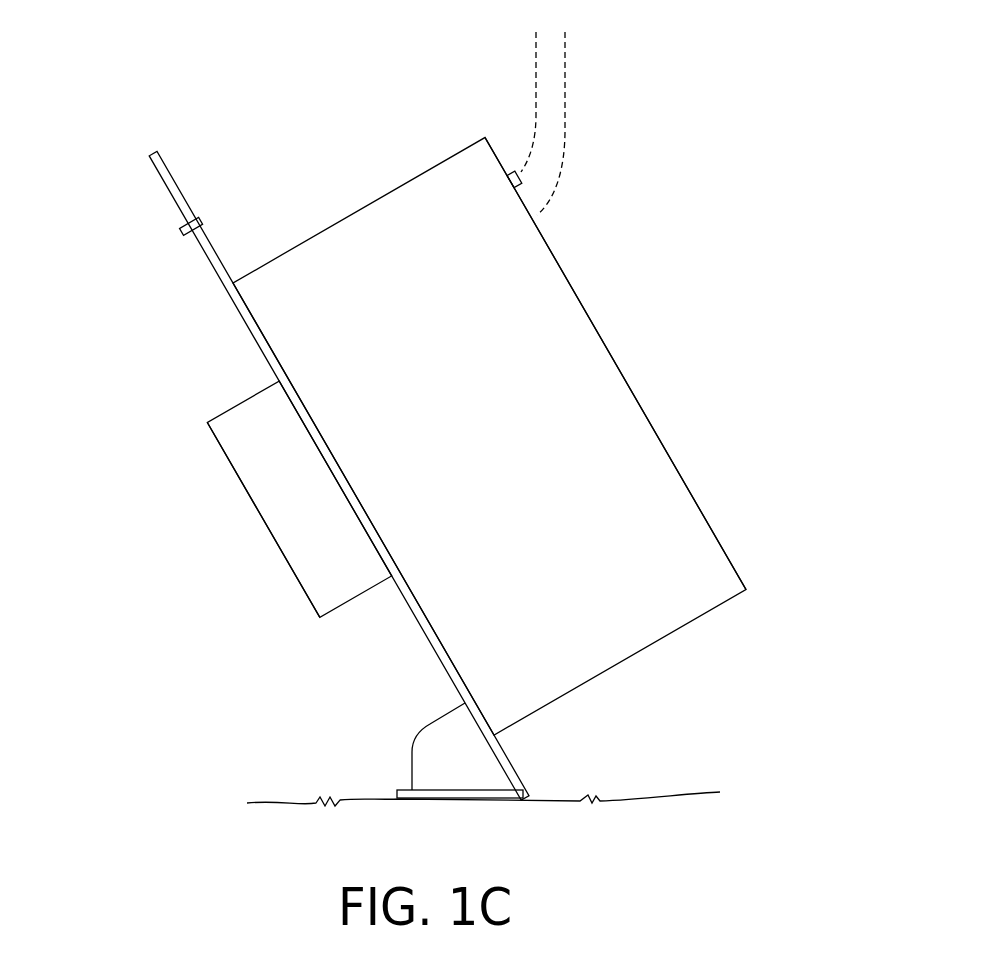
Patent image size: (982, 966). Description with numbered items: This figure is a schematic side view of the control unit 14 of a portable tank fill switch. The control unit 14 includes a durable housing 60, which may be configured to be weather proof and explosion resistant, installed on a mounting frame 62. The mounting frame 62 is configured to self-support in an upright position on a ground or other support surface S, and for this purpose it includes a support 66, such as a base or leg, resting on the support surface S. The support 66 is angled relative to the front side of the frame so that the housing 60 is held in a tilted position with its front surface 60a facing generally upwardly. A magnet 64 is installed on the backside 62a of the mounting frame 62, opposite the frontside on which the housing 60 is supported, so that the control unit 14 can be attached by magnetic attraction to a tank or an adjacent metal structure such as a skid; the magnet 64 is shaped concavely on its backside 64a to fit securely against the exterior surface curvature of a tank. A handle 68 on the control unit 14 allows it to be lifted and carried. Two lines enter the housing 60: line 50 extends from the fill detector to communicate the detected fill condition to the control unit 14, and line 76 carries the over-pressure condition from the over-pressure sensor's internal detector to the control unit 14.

The control unit 14 is at (808, 644).
The line 50 is at (535, 77).
The housing 60 is at (626, 440).
The front surface 60a is at (582, 303).
The mounting frame 62 is at (512, 758).
The backside 62a is at (437, 665).
The magnet 64 is at (307, 522).
The backside of magnet 64a is at (218, 452).
The support 66 is at (412, 787).
The handle 68 is at (160, 184).
The line 76 is at (566, 80).
The support surface S is at (627, 797).